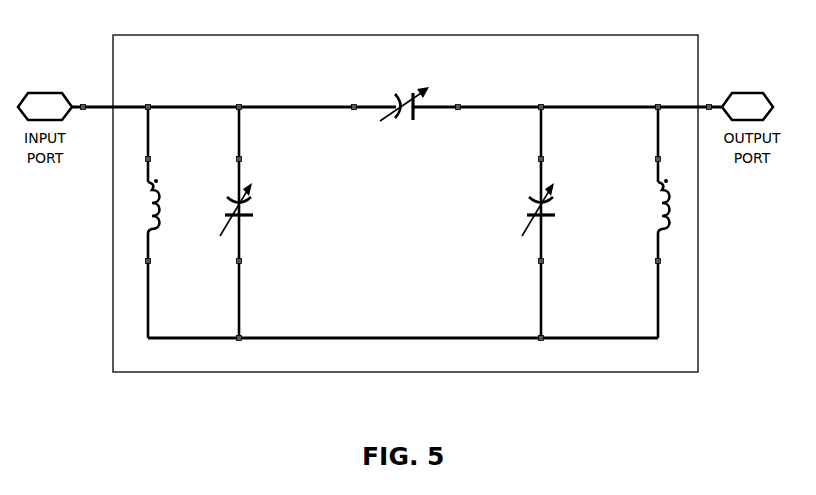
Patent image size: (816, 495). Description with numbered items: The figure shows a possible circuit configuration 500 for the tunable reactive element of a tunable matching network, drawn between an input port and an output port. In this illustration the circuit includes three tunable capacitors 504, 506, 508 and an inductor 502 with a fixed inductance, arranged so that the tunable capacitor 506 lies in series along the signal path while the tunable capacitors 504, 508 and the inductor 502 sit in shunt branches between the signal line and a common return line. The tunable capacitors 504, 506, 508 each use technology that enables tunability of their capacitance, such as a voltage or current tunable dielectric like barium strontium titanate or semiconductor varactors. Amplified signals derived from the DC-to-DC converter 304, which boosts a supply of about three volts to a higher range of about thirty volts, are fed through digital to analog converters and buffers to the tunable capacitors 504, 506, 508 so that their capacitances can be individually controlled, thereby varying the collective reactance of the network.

The DC-to-DC converter 304 is at (683, 63).
The tunable filter circuit 500 is at (396, 251).
The inductor 502 is at (155, 207).
The tunable capacitor 504 is at (248, 217).
The tunable capacitor 506 is at (415, 117).
The tunable capacitor 508 is at (548, 216).